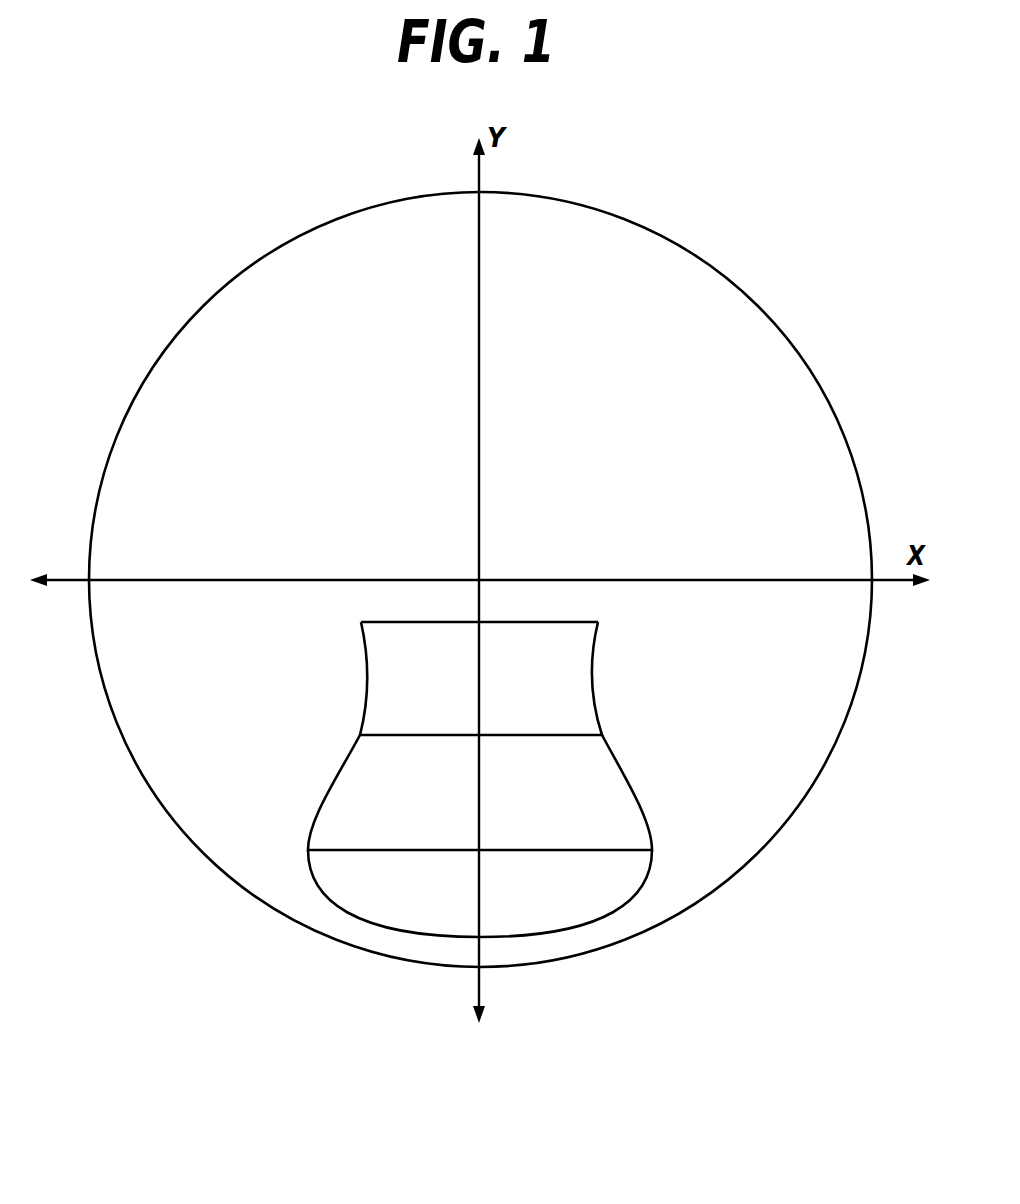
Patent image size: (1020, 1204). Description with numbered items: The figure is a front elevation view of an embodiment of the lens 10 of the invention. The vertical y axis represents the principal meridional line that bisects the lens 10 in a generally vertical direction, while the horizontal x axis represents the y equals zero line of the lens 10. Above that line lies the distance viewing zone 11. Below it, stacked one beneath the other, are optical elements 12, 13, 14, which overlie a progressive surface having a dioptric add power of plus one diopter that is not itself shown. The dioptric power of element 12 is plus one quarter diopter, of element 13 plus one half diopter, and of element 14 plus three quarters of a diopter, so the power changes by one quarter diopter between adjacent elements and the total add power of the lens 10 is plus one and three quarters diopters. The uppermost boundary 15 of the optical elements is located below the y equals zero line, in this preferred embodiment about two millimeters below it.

The lens 10 is at (686, 244).
The distance viewing zone 11 is at (329, 426).
The optical element 12 is at (439, 697).
The optical element 13 is at (423, 807).
The optical element 14 is at (419, 899).
The segment top edge 15 is at (543, 621).